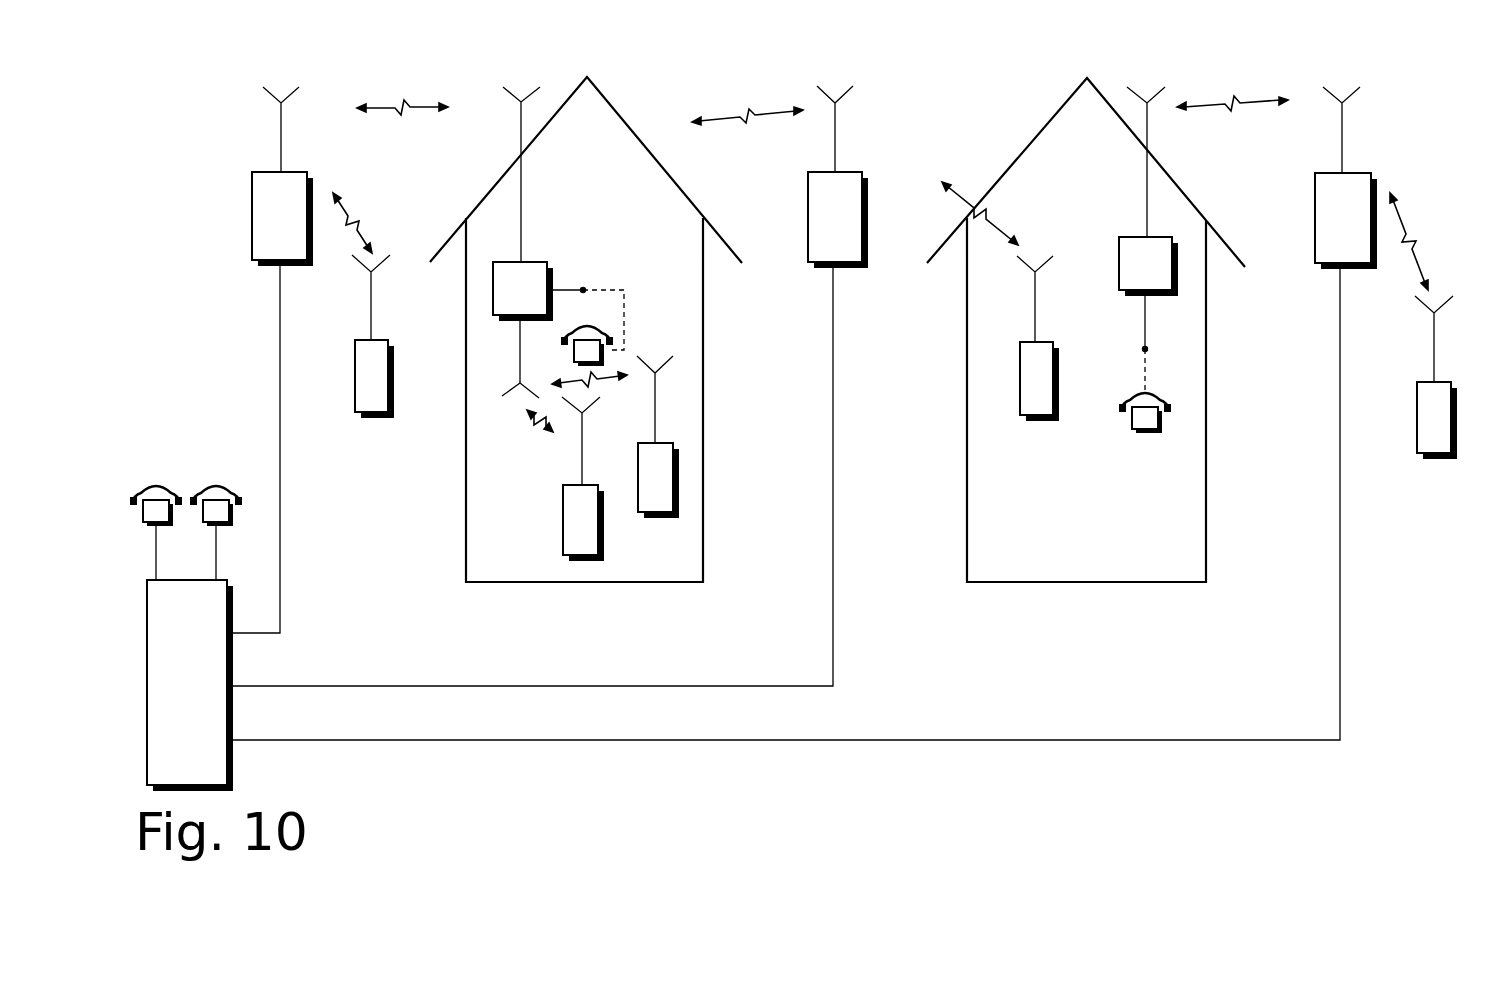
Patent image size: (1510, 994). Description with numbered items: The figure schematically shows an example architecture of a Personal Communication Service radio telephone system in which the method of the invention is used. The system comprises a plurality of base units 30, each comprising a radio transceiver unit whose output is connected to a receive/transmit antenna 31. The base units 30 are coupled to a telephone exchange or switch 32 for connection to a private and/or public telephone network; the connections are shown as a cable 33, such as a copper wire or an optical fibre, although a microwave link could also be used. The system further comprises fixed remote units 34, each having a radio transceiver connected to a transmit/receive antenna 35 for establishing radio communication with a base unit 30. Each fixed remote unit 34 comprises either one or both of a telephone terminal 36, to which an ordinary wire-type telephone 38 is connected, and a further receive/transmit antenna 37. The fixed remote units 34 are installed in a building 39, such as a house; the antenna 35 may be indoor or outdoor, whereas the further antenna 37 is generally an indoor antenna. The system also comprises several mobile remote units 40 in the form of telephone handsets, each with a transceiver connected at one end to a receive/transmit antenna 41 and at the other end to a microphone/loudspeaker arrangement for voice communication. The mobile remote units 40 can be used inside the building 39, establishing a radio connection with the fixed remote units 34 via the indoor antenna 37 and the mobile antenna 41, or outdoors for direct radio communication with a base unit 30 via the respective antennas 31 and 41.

The base unit 30 is at (302, 188).
The receive/transmit antenna 31 is at (287, 97).
The telephone exchange 32 is at (224, 600).
The cable 33 is at (278, 479).
The fixed remote unit 34 is at (542, 284).
The transmit/receive antenna 35 is at (503, 89).
The telephone terminal 36 is at (592, 283).
The further receive/transmit antenna 37 is at (498, 395).
The wire-type telephone 38 is at (586, 327).
The building 39 is at (696, 578).
The mobile remote unit 40 is at (380, 356).
The receive/transmit antenna 41 is at (383, 264).